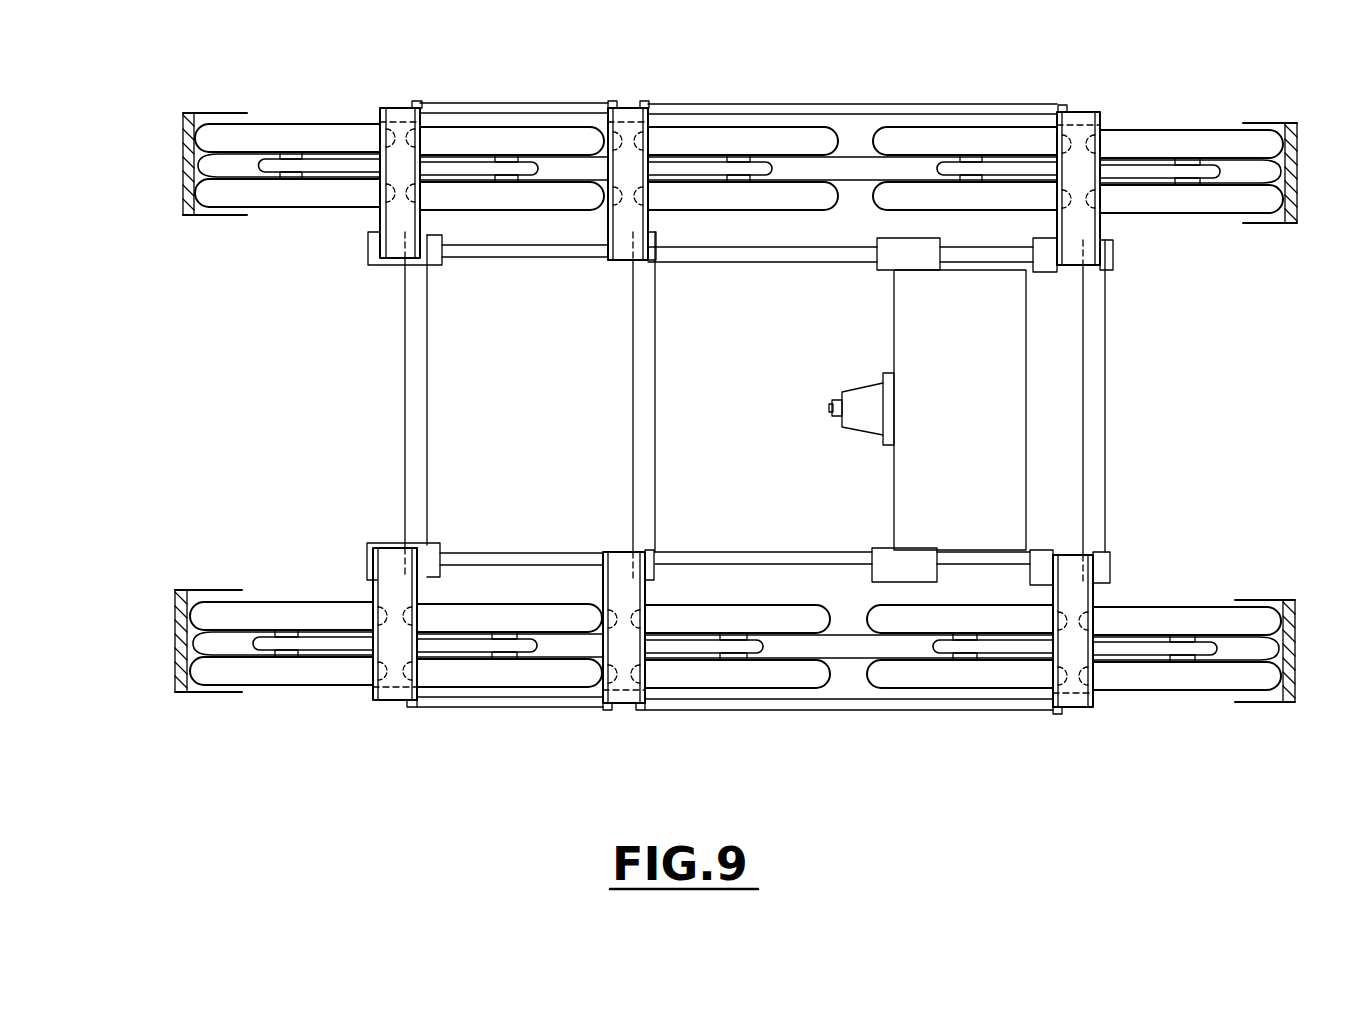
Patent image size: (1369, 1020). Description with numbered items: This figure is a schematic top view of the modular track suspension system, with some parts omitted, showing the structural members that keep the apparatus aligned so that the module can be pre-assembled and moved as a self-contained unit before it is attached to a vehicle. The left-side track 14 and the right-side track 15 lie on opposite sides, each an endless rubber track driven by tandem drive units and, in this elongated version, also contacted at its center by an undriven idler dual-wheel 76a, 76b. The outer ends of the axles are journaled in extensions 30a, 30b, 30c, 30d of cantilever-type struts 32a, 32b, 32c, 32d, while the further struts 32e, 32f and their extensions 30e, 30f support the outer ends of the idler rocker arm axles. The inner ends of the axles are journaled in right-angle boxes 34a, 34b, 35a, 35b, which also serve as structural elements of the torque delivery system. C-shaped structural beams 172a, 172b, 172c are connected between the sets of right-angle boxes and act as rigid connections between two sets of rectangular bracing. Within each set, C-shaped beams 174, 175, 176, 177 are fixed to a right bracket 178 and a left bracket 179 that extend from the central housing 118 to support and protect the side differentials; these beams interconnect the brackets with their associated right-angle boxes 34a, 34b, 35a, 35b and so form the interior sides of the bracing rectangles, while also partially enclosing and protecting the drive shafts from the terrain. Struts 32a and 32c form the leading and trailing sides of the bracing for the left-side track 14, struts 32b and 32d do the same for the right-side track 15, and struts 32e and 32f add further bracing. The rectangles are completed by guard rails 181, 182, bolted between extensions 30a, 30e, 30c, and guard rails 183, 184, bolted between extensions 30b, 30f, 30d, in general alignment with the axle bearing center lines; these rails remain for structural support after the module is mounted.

The left-side track 14 is at (178, 638).
The right-side track 15 is at (1293, 178).
The strut extension 30a is at (388, 704).
The strut extension 30b is at (398, 112).
The strut extension 30c is at (1072, 708).
The strut extension 30d is at (1080, 115).
The strut extension 30e is at (622, 710).
The strut extension 30f is at (625, 120).
The cantilever-type strut 32a is at (383, 675).
The cantilever-type strut 32b is at (400, 130).
The cantilever-type strut 32c is at (1073, 683).
The cantilever-type strut 32d is at (1080, 138).
The cantilever-type strut 32e is at (623, 598).
The cantilever-type strut 32f is at (630, 215).
The right-angle box 34a is at (432, 557).
The right-angle box 34b is at (1048, 265).
The right-angle box 35a is at (433, 262).
The right-angle box 35b is at (1047, 552).
The idler dual-wheel 76a is at (792, 677).
The idler dual-wheel 76b is at (717, 138).
The central housing 118 is at (973, 389).
The C-shaped structural beam 172a is at (413, 340).
The C-shaped structural beam 172b is at (642, 402).
The C-shaped structural beam 172c is at (1100, 397).
The C-shaped beam 174 is at (543, 253).
The C-shaped beam 175 is at (527, 563).
The C-shaped beam 176 is at (963, 255).
The C-shaped beam 177 is at (983, 534).
The right bracket 178 is at (893, 262).
The left bracket 179 is at (895, 558).
The guard rail 181 is at (517, 703).
The guard rail 182 is at (885, 705).
The guard rail 183 is at (502, 108).
The guard rail 184 is at (785, 118).